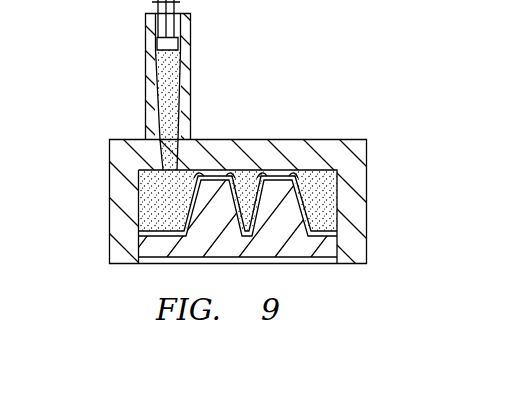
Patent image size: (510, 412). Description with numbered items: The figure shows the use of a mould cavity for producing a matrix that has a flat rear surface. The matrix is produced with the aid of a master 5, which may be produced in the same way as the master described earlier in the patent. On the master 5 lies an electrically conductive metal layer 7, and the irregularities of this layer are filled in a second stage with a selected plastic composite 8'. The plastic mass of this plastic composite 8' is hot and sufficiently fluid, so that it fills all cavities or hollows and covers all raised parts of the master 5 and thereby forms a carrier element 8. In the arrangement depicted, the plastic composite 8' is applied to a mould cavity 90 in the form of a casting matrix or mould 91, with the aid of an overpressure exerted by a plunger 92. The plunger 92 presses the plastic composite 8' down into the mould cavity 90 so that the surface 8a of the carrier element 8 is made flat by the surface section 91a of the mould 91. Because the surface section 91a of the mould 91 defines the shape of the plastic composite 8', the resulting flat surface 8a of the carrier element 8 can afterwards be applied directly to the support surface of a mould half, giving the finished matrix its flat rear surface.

The master 5 is at (200, 252).
The electrically conductive metal layer 7 is at (297, 200).
The carrier element 8 is at (324, 168).
The flat upper surface 8a is at (268, 172).
The plastic composite 8' is at (151, 91).
The mould cavity 90 is at (138, 212).
The mould 91 is at (110, 155).
The surface section 91a is at (213, 172).
The plunger 92 is at (166, 42).